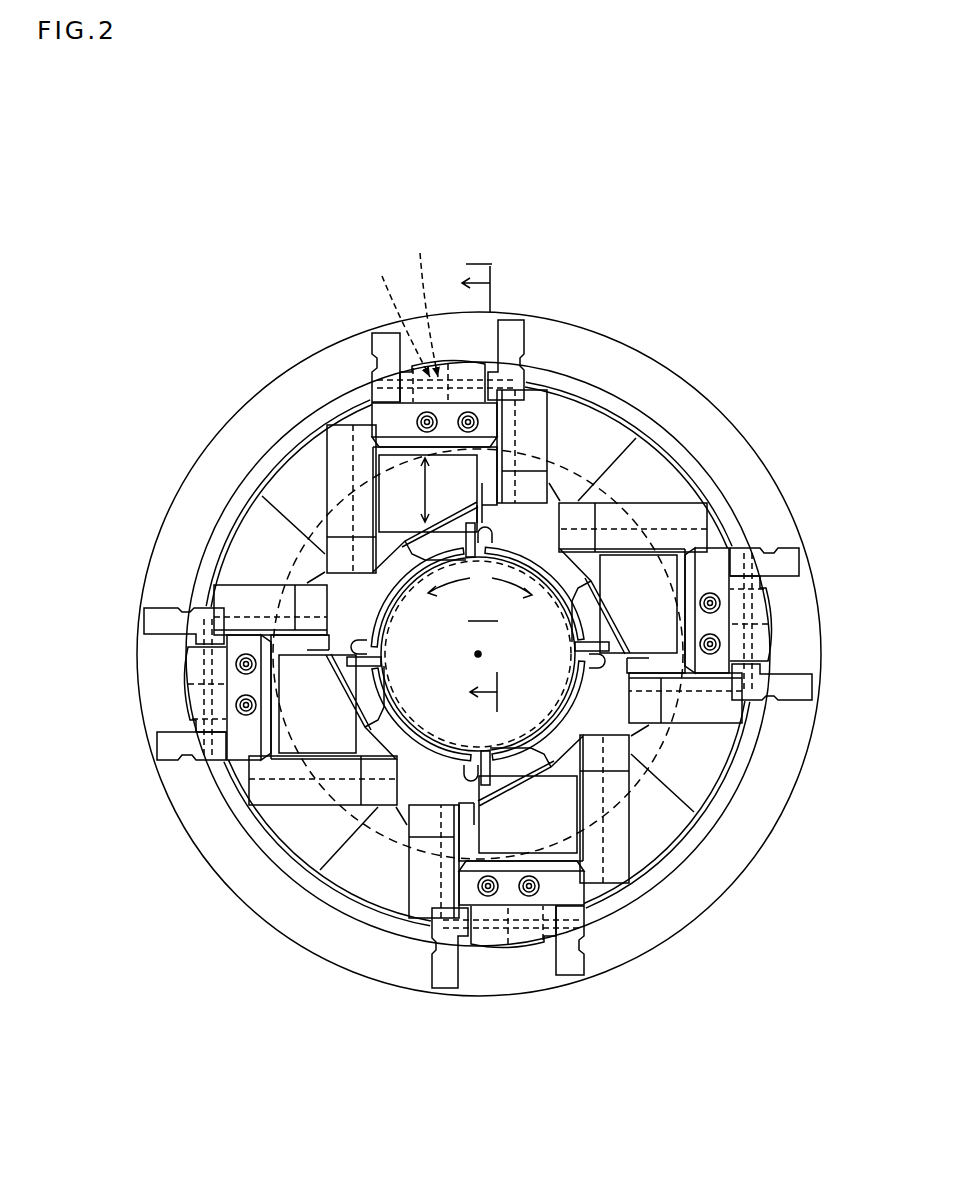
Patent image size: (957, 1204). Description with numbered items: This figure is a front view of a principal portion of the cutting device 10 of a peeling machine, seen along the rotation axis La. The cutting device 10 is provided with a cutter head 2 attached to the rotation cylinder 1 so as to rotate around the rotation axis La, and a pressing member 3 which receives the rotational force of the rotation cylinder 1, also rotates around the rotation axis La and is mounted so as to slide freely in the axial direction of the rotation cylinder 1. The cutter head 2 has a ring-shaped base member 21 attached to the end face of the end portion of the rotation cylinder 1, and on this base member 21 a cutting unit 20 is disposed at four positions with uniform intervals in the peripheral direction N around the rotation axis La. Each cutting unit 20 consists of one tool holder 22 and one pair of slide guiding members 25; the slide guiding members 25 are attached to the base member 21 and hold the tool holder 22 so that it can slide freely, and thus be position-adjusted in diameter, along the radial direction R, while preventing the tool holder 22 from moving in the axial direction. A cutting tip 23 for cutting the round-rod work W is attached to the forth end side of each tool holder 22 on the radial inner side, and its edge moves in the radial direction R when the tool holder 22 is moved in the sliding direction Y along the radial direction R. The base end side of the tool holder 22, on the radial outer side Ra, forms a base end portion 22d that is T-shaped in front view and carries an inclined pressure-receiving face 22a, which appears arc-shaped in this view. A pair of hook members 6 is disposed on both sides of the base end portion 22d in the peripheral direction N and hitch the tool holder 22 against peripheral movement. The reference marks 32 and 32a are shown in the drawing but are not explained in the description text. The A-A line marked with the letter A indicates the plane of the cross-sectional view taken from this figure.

The rotation cylinder 1 is at (569, 436).
The cutter head 2 is at (657, 479).
The pressing member 3 is at (254, 399).
The hook member 6 is at (370, 364).
The cutting device 10 is at (731, 373).
The cutting unit 20 is at (323, 504).
The base member 21 is at (601, 431).
The tool holder 22 is at (397, 469).
The pressure-receiving face 22a is at (429, 304).
The base end portion 22d is at (446, 364).
The cutting tip 23 is at (480, 548).
The slide guiding member 25 is at (334, 483).
The cover ring 32 is at (311, 353).
The cover slot 32a is at (400, 316).
The work W is at (567, 497).
The radial direction R is at (478, 490).
The sliding direction Y is at (423, 490).
The peripheral direction N is at (480, 579).
The rotation axis La is at (482, 652).
The radial outer side Ra is at (481, 430).
The A-A line A is at (471, 489).